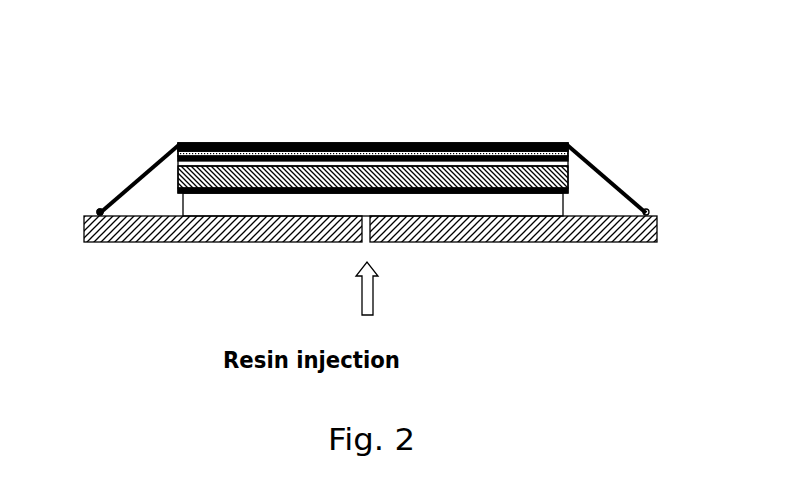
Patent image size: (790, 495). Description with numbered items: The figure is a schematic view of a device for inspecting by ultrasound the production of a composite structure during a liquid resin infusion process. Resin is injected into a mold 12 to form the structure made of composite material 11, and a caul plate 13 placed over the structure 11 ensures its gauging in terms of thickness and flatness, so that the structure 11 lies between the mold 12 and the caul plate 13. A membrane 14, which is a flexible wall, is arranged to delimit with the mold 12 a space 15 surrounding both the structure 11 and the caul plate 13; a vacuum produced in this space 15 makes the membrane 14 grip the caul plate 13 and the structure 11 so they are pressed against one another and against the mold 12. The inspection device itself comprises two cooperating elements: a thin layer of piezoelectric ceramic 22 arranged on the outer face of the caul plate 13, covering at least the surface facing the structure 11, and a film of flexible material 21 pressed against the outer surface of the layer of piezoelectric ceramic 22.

The structure made of composite material 11 is at (536, 200).
The mold 12 is at (177, 242).
The caul plate 13 is at (573, 172).
The membrane 14 is at (149, 165).
The space 15 is at (147, 198).
The film of flexible material 21 is at (545, 142).
The layer of piezoelectric ceramic 22 is at (457, 141).